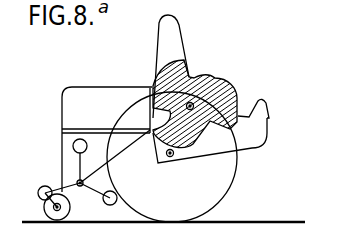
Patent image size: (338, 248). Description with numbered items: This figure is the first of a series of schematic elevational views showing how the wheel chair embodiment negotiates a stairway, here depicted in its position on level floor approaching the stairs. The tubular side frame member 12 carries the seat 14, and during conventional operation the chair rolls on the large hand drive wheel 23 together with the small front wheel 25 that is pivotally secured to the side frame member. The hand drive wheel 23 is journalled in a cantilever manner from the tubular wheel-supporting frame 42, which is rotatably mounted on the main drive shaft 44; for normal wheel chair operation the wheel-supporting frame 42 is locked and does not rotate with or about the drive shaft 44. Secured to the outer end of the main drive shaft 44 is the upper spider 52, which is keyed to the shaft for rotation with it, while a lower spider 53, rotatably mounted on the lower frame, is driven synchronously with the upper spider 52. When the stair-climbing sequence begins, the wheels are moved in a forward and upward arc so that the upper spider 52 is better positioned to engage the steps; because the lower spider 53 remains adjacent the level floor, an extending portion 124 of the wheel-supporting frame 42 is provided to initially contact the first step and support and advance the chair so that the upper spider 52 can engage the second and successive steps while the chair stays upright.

The tubular side frame member 12 is at (101, 87).
The seat 14 is at (97, 128).
The lower spider 53 is at (80, 168).
The small front wheel 25 is at (44, 207).
The large hand drive wheel 23 is at (231, 186).
The upper spider 52 is at (220, 78).
The main drive shaft 44 is at (190, 110).
The tubular wheel-supporting frame 42 is at (219, 158).
The extending portion 124 is at (270, 117).